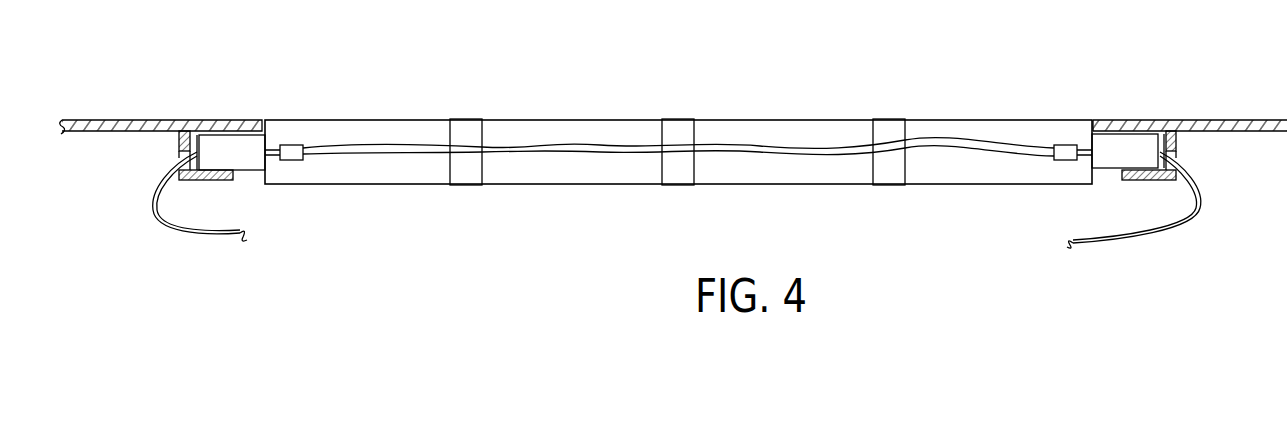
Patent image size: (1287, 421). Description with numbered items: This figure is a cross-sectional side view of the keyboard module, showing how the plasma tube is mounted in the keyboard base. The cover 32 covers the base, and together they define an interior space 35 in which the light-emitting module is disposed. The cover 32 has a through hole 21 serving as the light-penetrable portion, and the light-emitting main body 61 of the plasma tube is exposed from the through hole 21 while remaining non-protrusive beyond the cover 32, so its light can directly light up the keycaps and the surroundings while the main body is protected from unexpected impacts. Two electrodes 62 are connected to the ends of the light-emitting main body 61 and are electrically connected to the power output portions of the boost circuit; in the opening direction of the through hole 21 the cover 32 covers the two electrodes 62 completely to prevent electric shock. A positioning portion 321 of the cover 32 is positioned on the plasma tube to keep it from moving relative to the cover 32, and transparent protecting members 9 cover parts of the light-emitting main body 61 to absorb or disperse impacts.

The cover 32 is at (158, 123).
The positioning portion 321 is at (1177, 145).
The through hole 21 is at (287, 110).
The protecting member 9 is at (463, 125).
The light-emitting main body 61 is at (365, 130).
The electrode 62 is at (1122, 148).
The interior space 35 is at (130, 198).